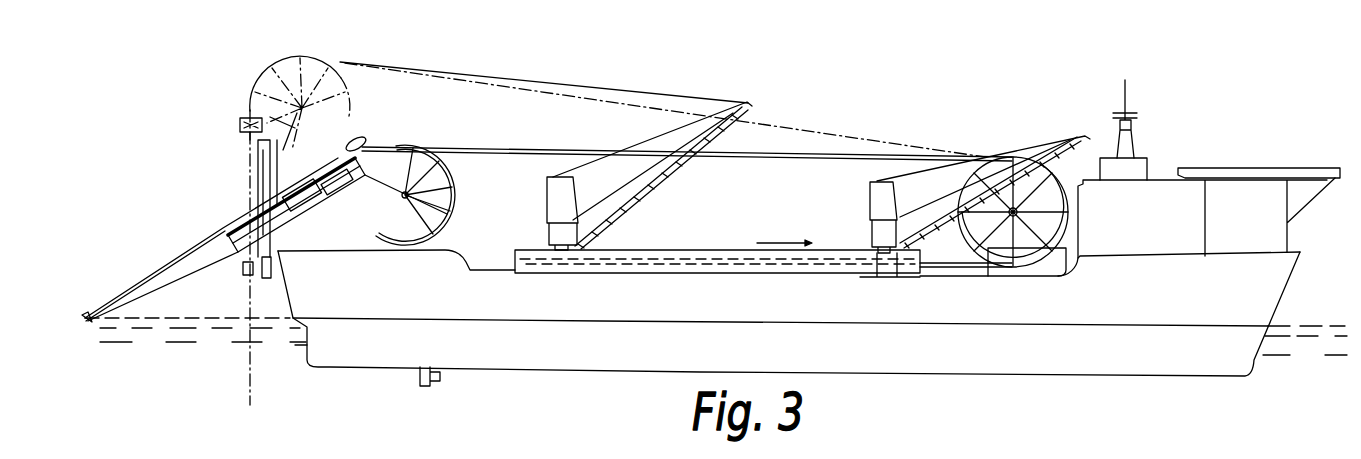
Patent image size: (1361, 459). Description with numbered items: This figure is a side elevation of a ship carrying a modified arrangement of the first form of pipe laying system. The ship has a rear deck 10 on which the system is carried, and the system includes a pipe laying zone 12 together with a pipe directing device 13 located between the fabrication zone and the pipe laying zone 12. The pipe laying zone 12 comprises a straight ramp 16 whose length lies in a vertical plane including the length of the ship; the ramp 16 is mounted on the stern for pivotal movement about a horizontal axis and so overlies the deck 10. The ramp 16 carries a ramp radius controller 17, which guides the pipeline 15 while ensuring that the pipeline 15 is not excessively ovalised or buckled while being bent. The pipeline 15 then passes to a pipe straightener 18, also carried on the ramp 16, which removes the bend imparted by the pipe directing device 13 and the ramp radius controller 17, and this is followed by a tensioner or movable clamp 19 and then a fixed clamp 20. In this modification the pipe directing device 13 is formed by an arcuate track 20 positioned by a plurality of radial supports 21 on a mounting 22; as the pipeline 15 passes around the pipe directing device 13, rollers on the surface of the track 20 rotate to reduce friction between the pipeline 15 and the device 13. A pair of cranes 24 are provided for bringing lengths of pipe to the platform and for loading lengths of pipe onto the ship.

The rear deck 10 is at (953, 270).
The pipe laying zone 12 is at (297, 167).
The pipe directing device 13 is at (1086, 163).
The pipeline 15 is at (507, 80).
The straight ramp 16 is at (346, 186).
The ramp radius controller 17 is at (300, 57).
The pipe straightener 18 is at (360, 138).
The tensioner or movable clamp 19 is at (311, 207).
The arcuate track 20 is at (237, 223).
The radial supports 21 is at (981, 197).
The mounting 22 is at (960, 197).
The cranes 24 is at (656, 177).